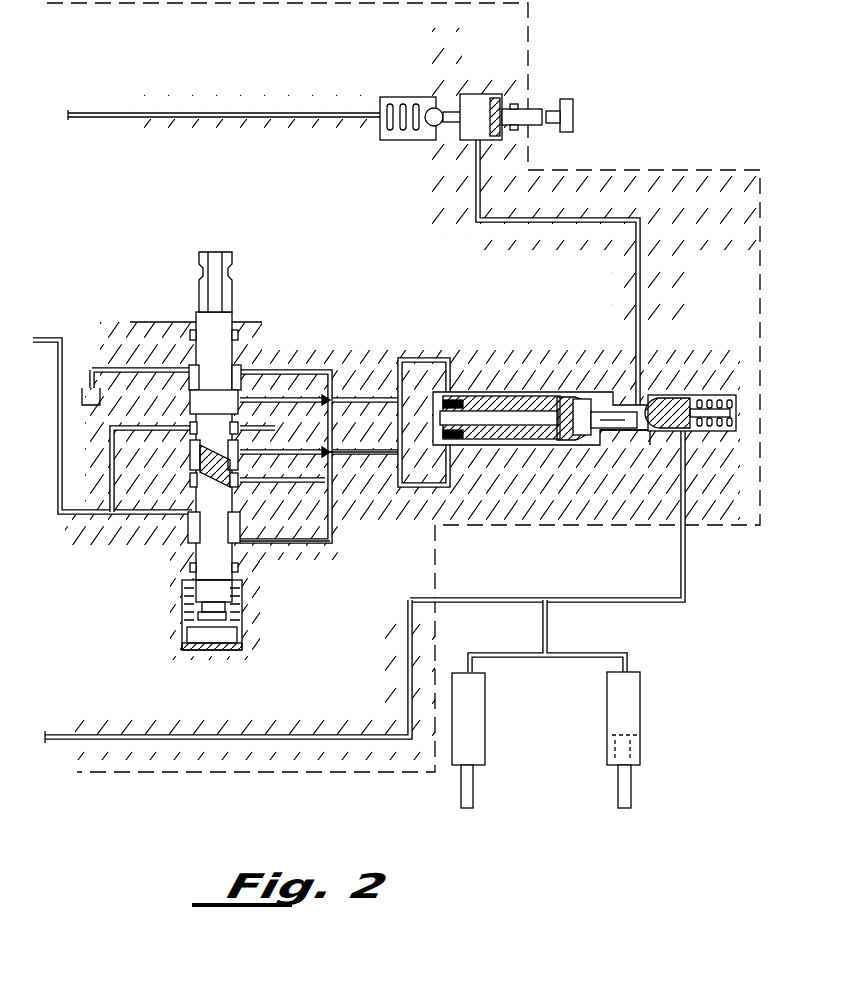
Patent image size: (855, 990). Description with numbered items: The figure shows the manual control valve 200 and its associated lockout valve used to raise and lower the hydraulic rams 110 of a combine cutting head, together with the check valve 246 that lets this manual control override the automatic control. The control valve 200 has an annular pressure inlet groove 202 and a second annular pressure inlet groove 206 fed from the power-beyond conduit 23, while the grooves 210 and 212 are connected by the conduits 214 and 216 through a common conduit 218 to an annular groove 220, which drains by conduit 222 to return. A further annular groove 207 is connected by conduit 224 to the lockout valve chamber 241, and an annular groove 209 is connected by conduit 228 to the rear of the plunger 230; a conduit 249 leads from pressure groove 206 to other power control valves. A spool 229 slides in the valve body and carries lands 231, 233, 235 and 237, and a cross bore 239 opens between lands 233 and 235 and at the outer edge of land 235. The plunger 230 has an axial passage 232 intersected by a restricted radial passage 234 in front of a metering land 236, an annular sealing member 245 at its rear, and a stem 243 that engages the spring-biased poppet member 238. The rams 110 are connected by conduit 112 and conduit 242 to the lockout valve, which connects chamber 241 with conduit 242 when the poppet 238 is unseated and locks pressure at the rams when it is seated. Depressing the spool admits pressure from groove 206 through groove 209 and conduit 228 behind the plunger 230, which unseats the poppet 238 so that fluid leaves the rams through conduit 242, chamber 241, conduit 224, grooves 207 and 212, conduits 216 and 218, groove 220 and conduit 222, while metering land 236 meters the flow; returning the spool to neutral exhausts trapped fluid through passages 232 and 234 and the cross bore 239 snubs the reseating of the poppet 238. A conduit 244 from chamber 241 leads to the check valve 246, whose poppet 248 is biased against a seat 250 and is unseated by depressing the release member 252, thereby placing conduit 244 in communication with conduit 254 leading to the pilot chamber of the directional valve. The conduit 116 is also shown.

The power-beyond conduit 23 is at (92, 515).
The hydraulic rams 110 is at (463, 790).
The conduit 112 is at (503, 658).
The conduit 116 is at (262, 735).
The manual control valve 200 is at (218, 451).
The annular pressure inlet groove 202 is at (196, 540).
The second annular pressure inlet groove 206 is at (196, 437).
The annular groove 207 is at (238, 452).
The annular groove 209 is at (232, 402).
The groove 210 is at (185, 590).
The groove 212 is at (196, 468).
The conduit 214 is at (328, 540).
The conduit 216 is at (258, 487).
The common conduit 218 is at (332, 393).
The annular groove 220 is at (240, 383).
The conduit 222 is at (105, 368).
The conduit 224 is at (368, 457).
The conduit 228 is at (412, 360).
The spool 229 is at (222, 325).
The plunger 230 is at (544, 416).
The land 231 is at (226, 370).
The axial passage 232 is at (485, 425).
The land 233 is at (196, 420).
The restricted radial passage 234 is at (572, 400).
The land 235 is at (237, 505).
The metering land 236 is at (528, 390).
The land 237 is at (240, 577).
The poppet member 238 is at (672, 398).
The cross bore 239 is at (205, 490).
The chamber 241 is at (600, 440).
The conduit 242 is at (684, 573).
The stem 243 is at (606, 428).
The conduit 244 is at (641, 258).
The annular sealing member 245 is at (460, 398).
The check valve 246 is at (438, 98).
The poppet 248 is at (442, 98).
The conduit 249 is at (265, 428).
The seat 250 is at (440, 127).
The release member 252 is at (578, 110).
The conduit 254 is at (190, 112).